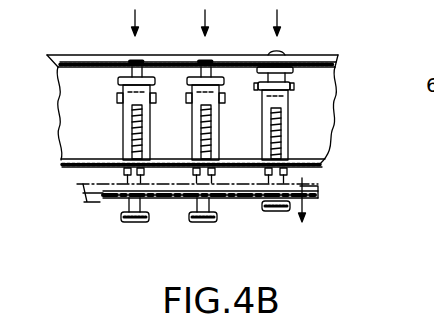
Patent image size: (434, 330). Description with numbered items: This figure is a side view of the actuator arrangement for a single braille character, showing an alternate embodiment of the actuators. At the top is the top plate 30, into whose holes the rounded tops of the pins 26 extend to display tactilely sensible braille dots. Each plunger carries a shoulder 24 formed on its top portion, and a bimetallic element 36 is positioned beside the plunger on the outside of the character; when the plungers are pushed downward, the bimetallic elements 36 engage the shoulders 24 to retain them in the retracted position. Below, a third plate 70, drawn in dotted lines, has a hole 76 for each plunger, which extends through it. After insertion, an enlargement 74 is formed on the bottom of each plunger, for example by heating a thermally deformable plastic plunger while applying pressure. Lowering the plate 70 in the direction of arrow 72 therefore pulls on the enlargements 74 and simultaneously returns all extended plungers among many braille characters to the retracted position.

The top plate 30 is at (70, 62).
The shoulder 24 is at (119, 79).
The pin 26 is at (279, 50).
The bimetallic element 36 is at (127, 119).
The third plate 70 is at (98, 200).
The arrow 72 is at (306, 204).
The enlargement 74 is at (147, 219).
The hole 76 is at (115, 211).